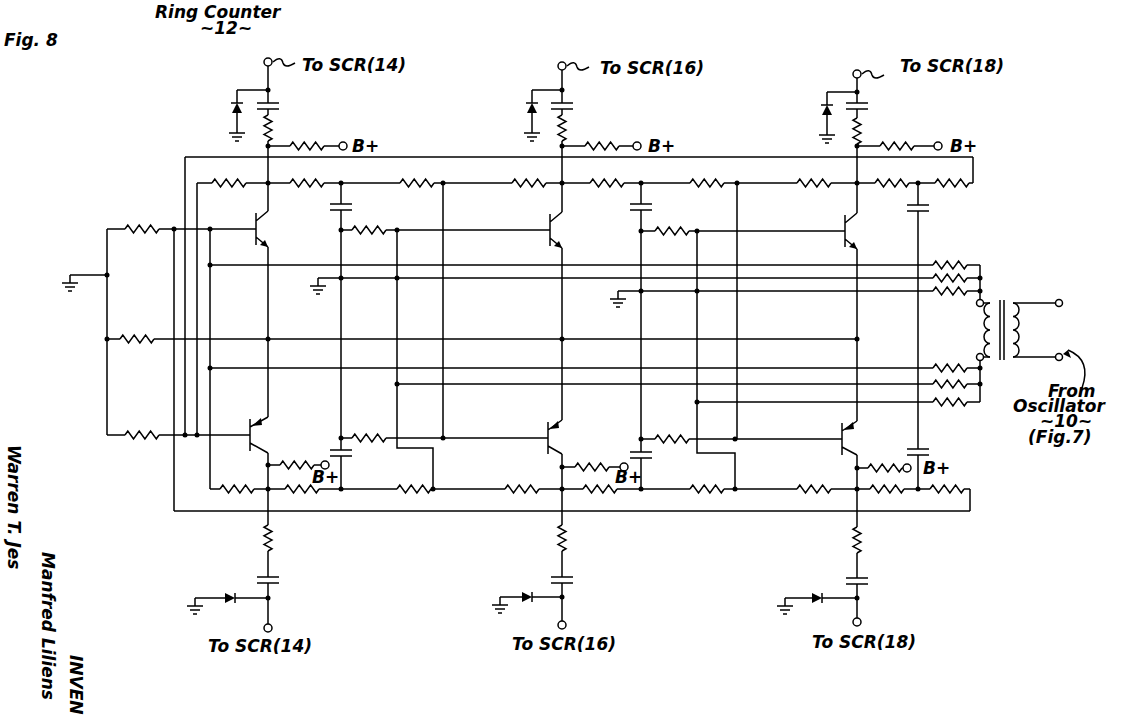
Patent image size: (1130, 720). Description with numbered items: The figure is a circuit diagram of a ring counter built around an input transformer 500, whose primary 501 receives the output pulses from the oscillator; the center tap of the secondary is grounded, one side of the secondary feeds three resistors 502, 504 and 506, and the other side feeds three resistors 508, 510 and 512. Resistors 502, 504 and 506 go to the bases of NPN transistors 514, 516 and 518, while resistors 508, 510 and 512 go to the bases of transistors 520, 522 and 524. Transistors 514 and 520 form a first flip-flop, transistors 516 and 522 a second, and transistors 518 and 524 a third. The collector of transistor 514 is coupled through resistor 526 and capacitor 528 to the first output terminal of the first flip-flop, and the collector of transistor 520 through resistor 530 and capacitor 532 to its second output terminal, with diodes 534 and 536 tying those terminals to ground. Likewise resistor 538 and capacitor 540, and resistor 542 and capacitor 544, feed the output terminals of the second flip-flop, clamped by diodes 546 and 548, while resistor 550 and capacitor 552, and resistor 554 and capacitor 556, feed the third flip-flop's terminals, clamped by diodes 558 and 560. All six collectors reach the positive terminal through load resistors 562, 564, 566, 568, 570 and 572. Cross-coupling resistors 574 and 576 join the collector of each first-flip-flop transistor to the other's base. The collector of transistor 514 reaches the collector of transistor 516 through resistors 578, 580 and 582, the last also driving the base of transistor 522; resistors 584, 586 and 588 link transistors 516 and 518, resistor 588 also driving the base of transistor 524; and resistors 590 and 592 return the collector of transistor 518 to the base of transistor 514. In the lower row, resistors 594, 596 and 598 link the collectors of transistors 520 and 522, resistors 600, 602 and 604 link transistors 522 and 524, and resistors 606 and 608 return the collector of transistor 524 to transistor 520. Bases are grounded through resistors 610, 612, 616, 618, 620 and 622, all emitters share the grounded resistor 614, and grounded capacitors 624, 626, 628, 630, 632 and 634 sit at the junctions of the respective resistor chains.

The input transformer 500 is at (1031, 313).
The primary 501 is at (1020, 340).
The resistor 502 is at (972, 245).
The resistor 504 is at (965, 278).
The resistor 506 is at (966, 294).
The resistor 508 is at (964, 368).
The resistor 510 is at (955, 389).
The resistor 512 is at (937, 406).
The transistor 514 is at (254, 222).
The transistor 516 is at (549, 222).
The transistor 518 is at (845, 223).
The transistor 520 is at (250, 427).
The transistor 522 is at (548, 430).
The transistor 524 is at (840, 435).
The resistor 526 is at (278, 128).
The capacitor 528 is at (283, 105).
The resistor 530 is at (276, 538).
The capacitor 532 is at (280, 578).
The diode 534 is at (230, 110).
The diode 536 is at (232, 586).
The resistor 538 is at (573, 128).
The capacitor 540 is at (578, 105).
The resistor 542 is at (568, 538).
The capacitor 544 is at (570, 578).
The diode 546 is at (525, 110).
The diode 548 is at (528, 588).
The resistor 550 is at (866, 128).
The capacitor 552 is at (870, 105).
The resistor 554 is at (863, 538).
The capacitor 556 is at (864, 578).
The diode 558 is at (820, 112).
The diode 560 is at (828, 588).
The resistor 562 is at (308, 142).
The resistor 564 is at (603, 142).
The resistor 566 is at (900, 142).
The resistor 568 is at (302, 453).
The resistor 570 is at (606, 467).
The resistor 572 is at (888, 465).
The resistor 574 is at (241, 177).
The resistor 576 is at (252, 481).
The resistor 578 is at (334, 177).
The resistor 580 is at (415, 177).
The resistor 582 is at (531, 177).
The resistor 584 is at (632, 177).
The resistor 586 is at (711, 177).
The resistor 588 is at (809, 177).
The resistor 590 is at (906, 177).
The resistor 592 is at (958, 181).
The resistor 594 is at (298, 489).
The resistor 596 is at (393, 489).
The resistor 598 is at (520, 491).
The resistor 600 is at (586, 490).
The resistor 602 is at (717, 491).
The resistor 604 is at (799, 497).
The resistor 606 is at (868, 490).
The resistor 608 is at (962, 489).
The resistor 610 is at (158, 224).
The resistor 612 is at (160, 418).
The resistor 614 is at (160, 322).
The resistor 616 is at (369, 230).
The resistor 618 is at (385, 423).
The resistor 620 is at (676, 229).
The resistor 622 is at (680, 423).
The capacitor 624 is at (356, 212).
The capacitor 626 is at (652, 211).
The capacitor 628 is at (340, 457).
The capacitor 630 is at (641, 457).
The capacitor 632 is at (931, 216).
The capacitor 634 is at (930, 453).